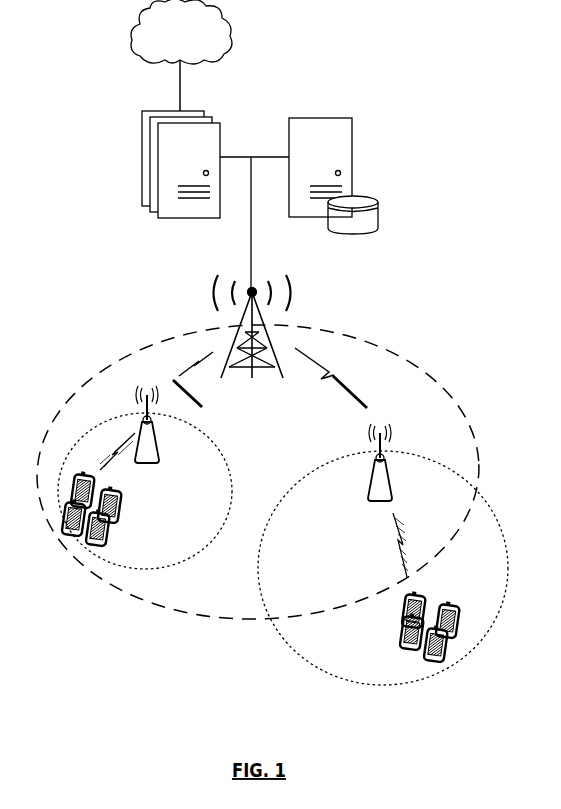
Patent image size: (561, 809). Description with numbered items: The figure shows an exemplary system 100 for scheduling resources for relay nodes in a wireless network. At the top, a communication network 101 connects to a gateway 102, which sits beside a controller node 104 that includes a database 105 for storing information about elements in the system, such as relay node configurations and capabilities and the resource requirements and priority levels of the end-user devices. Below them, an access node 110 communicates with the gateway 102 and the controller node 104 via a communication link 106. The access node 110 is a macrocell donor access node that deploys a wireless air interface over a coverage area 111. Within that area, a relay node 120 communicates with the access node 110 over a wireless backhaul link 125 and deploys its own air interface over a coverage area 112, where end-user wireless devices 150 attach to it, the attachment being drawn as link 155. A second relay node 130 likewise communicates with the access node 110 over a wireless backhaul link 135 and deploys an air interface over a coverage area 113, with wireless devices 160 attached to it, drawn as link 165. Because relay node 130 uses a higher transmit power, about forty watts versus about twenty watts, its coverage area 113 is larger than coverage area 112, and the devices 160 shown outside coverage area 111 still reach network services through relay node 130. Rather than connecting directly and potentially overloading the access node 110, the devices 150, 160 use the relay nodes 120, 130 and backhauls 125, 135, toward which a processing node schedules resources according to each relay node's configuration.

The system 100 is at (282, 62).
The communication network 101 is at (201, 38).
The gateway 102 is at (142, 111).
The controller node 104 is at (352, 118).
The database 105 is at (378, 198).
The communication link 106 is at (251, 232).
The access node 110 is at (241, 343).
The coverage area 111 is at (118, 590).
The coverage area 112 is at (165, 568).
The coverage area 113 is at (282, 635).
The relay node 120 is at (150, 463).
The communication link 125 is at (203, 407).
The relay node 130 is at (370, 508).
The communication link 135 is at (355, 404).
The end-user wireless devices 150 is at (128, 525).
The wireless access link 155 is at (122, 446).
The end-user wireless devices 160 is at (392, 646).
The wireless access link 165 is at (410, 548).